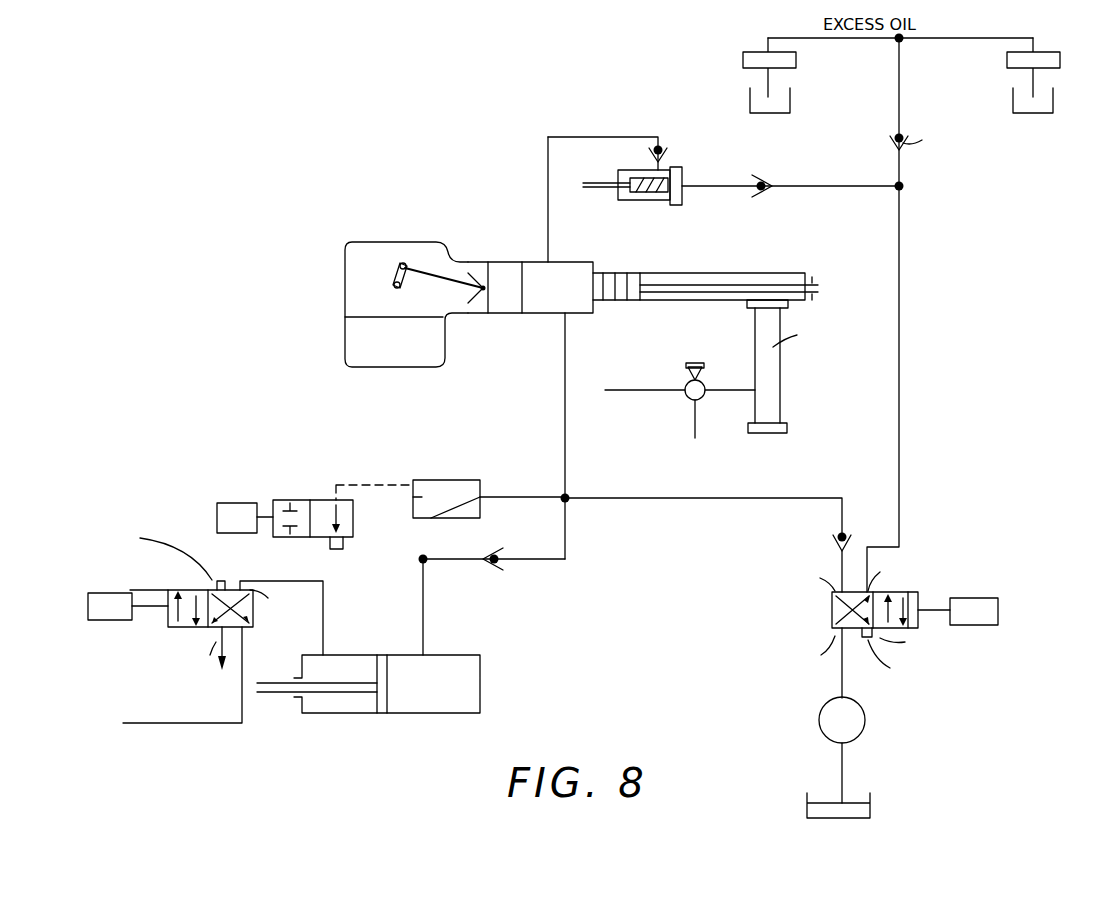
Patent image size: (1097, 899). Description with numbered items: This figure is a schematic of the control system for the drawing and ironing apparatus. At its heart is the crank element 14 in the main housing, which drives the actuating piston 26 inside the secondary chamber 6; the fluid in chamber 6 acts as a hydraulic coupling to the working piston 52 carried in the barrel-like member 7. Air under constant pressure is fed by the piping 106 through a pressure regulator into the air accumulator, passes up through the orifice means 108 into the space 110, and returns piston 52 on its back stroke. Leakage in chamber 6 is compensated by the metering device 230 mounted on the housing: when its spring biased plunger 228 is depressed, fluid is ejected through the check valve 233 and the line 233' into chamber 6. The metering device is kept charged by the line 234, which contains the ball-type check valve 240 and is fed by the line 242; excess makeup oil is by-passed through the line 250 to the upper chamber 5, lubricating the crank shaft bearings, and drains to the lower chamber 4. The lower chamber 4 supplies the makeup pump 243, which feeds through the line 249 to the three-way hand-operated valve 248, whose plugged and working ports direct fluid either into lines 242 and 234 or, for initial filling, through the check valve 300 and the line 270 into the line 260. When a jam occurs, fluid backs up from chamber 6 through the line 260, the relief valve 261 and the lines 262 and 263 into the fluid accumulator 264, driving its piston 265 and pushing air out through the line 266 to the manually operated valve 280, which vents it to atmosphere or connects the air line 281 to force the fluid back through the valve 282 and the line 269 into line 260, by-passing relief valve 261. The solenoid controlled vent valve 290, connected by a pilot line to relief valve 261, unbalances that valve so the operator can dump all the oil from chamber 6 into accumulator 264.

The lower chamber 4 is at (857, 792).
The upper chamber 5 is at (792, 100).
The secondary chamber 6 is at (553, 314).
The barrel-like member 7 is at (673, 272).
The crank element 14 is at (383, 252).
The actuating piston 26 is at (478, 314).
The working piston 52 is at (620, 301).
The piping 106 is at (645, 393).
The orifice means 108 is at (742, 306).
The space 110 is at (775, 278).
The spring biased plunger 228 is at (603, 183).
The metering device 230 is at (630, 172).
The check valve 233 is at (641, 135).
The line 233' is at (518, 199).
The line 234 is at (725, 187).
The ball-type check valve 240 is at (765, 180).
The line 242 is at (897, 442).
The makeup pump 243 is at (822, 712).
The three-way hand-operated valve 248 is at (830, 608).
The line 249 is at (840, 672).
The line 250 is at (899, 103).
The line 260 is at (565, 413).
The relief valve 261 is at (405, 492).
The line 262 is at (550, 470).
The line 263 is at (425, 636).
The fluid accumulator 264 is at (482, 697).
The piston 265 is at (400, 615).
The line 266 is at (262, 556).
The line 269 is at (568, 540).
The line 270 is at (697, 499).
The manually operated valve 280 is at (179, 636).
The air line 281 is at (222, 725).
The valve 282 is at (492, 552).
The solenoid controlled vent valve 290 is at (325, 500).
The check valve 300 is at (830, 537).